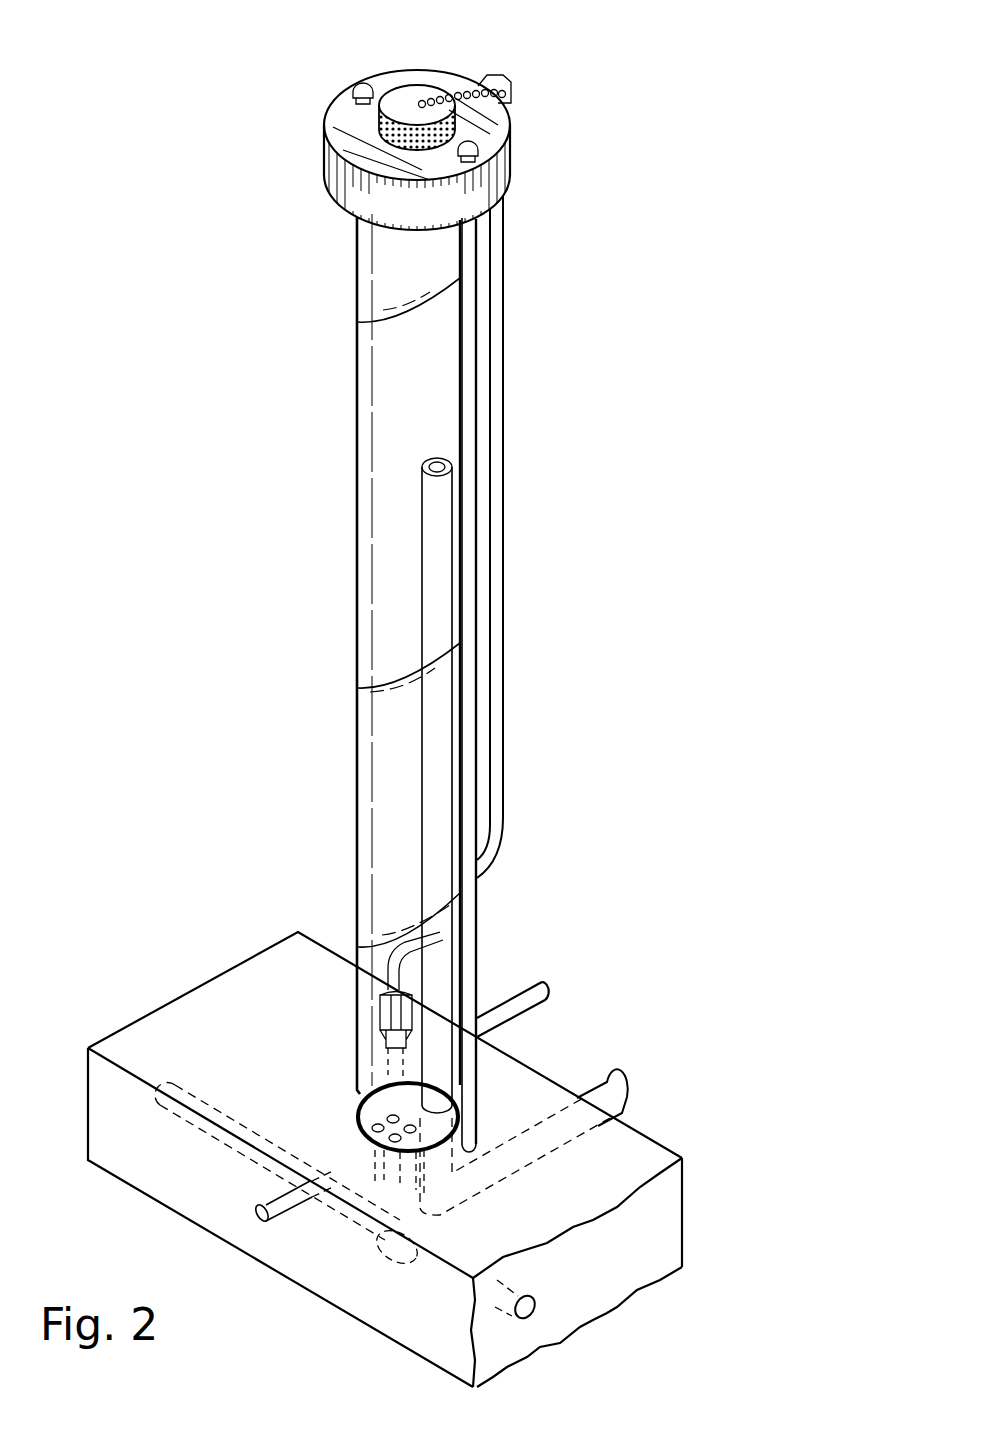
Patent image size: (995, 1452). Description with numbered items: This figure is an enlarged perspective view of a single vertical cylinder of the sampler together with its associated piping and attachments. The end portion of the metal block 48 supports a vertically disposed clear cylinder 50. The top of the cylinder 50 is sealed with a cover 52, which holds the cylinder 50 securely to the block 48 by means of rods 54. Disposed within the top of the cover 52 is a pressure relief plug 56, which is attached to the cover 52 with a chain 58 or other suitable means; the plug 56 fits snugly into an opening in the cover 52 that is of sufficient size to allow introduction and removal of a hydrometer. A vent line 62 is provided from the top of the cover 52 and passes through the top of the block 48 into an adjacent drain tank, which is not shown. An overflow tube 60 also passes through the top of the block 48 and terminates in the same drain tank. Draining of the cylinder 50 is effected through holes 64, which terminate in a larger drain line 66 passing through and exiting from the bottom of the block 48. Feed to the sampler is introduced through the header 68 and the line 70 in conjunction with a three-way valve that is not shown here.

The metal block 48 is at (247, 1035).
The clear cylinder 50 is at (393, 672).
The cover 52 is at (510, 150).
The rods 54 is at (460, 325).
The pressure relief plug 56 is at (410, 84).
The chain 58 is at (472, 92).
The overflow tube 60 is at (432, 456).
The vent line 62 is at (500, 810).
The holes 64 is at (357, 1107).
The drain line 66 is at (388, 1262).
The header 68 is at (540, 1298).
The line 70 is at (280, 1218).